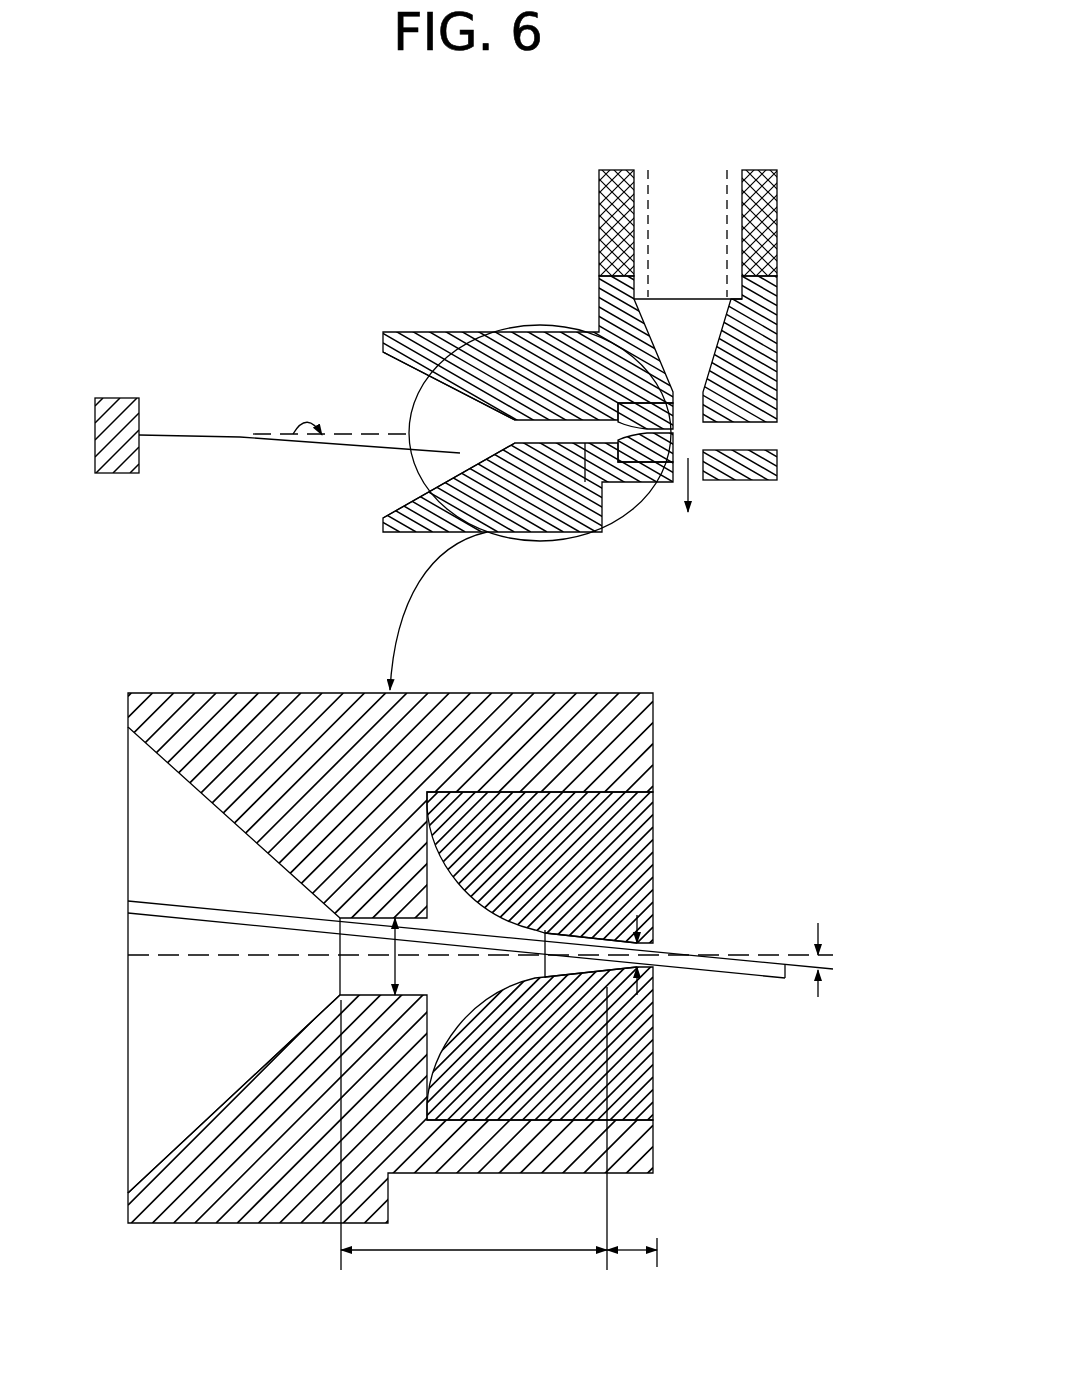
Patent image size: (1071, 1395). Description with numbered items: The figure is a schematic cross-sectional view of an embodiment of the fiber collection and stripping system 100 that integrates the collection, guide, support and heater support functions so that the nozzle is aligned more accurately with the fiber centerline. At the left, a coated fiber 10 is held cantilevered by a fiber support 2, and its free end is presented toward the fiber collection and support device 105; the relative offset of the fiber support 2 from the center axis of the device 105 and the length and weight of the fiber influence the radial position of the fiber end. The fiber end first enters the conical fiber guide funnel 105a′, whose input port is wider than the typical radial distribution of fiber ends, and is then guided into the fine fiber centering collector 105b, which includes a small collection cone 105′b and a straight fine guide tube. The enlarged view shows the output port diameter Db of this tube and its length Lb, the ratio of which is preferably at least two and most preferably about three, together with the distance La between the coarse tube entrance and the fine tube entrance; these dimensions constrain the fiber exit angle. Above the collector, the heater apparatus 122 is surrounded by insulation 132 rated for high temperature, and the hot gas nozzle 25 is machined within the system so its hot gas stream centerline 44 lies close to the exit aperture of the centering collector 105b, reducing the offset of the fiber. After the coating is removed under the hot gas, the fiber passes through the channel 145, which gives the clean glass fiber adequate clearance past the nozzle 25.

The fiber support 2 is at (113, 398).
The fiber 10 is at (205, 435).
The fiber collection and stripping system 100 is at (580, 157).
The heater apparatus 122 is at (645, 223).
The fiber collection and support device 105 is at (533, 325).
The insulation 132 is at (775, 232).
The hot gas stream nozzle 25 is at (712, 327).
The channel 145 is at (730, 438).
The hot gas stream centerline 44 is at (689, 504).
The fine fiber centering collector 105b is at (647, 462).
The conical fiber guide funnel 105a′ is at (523, 537).
The small collection cone 105′b is at (605, 919).
The output port diameter Db is at (653, 990).
The distance between coarse tube entrance and fine guide tube entrance La is at (463, 1253).
The length of fine guide tube Lb is at (632, 1253).